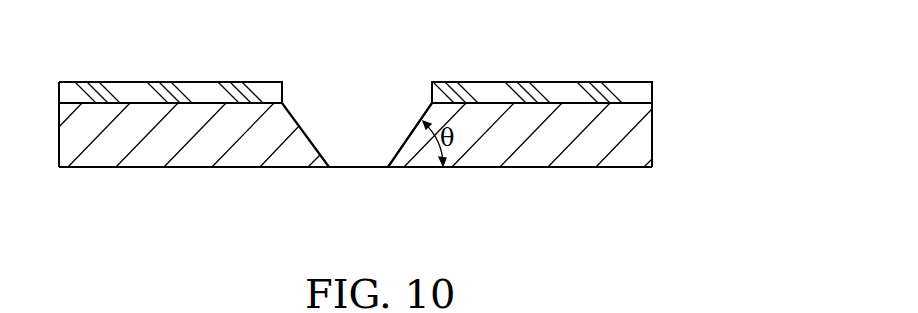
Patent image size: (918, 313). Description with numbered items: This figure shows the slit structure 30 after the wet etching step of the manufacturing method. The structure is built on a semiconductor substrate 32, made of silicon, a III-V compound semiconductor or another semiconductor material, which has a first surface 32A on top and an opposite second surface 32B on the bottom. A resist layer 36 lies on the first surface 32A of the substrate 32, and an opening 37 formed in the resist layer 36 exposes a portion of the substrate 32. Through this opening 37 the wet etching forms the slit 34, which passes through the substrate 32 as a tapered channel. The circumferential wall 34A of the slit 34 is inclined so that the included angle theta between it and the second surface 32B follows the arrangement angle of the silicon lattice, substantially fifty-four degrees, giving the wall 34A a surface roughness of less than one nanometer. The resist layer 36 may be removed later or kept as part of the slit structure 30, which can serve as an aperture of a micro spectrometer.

The slit structure 30 is at (552, 65).
The semiconductor substrate 32 is at (652, 143).
The first surface 32A is at (212, 103).
The second surface 32B is at (477, 170).
The slit 34 is at (348, 152).
The circumferential wall 34A is at (408, 132).
The resist layer 36 is at (652, 93).
The opening 37 is at (350, 92).